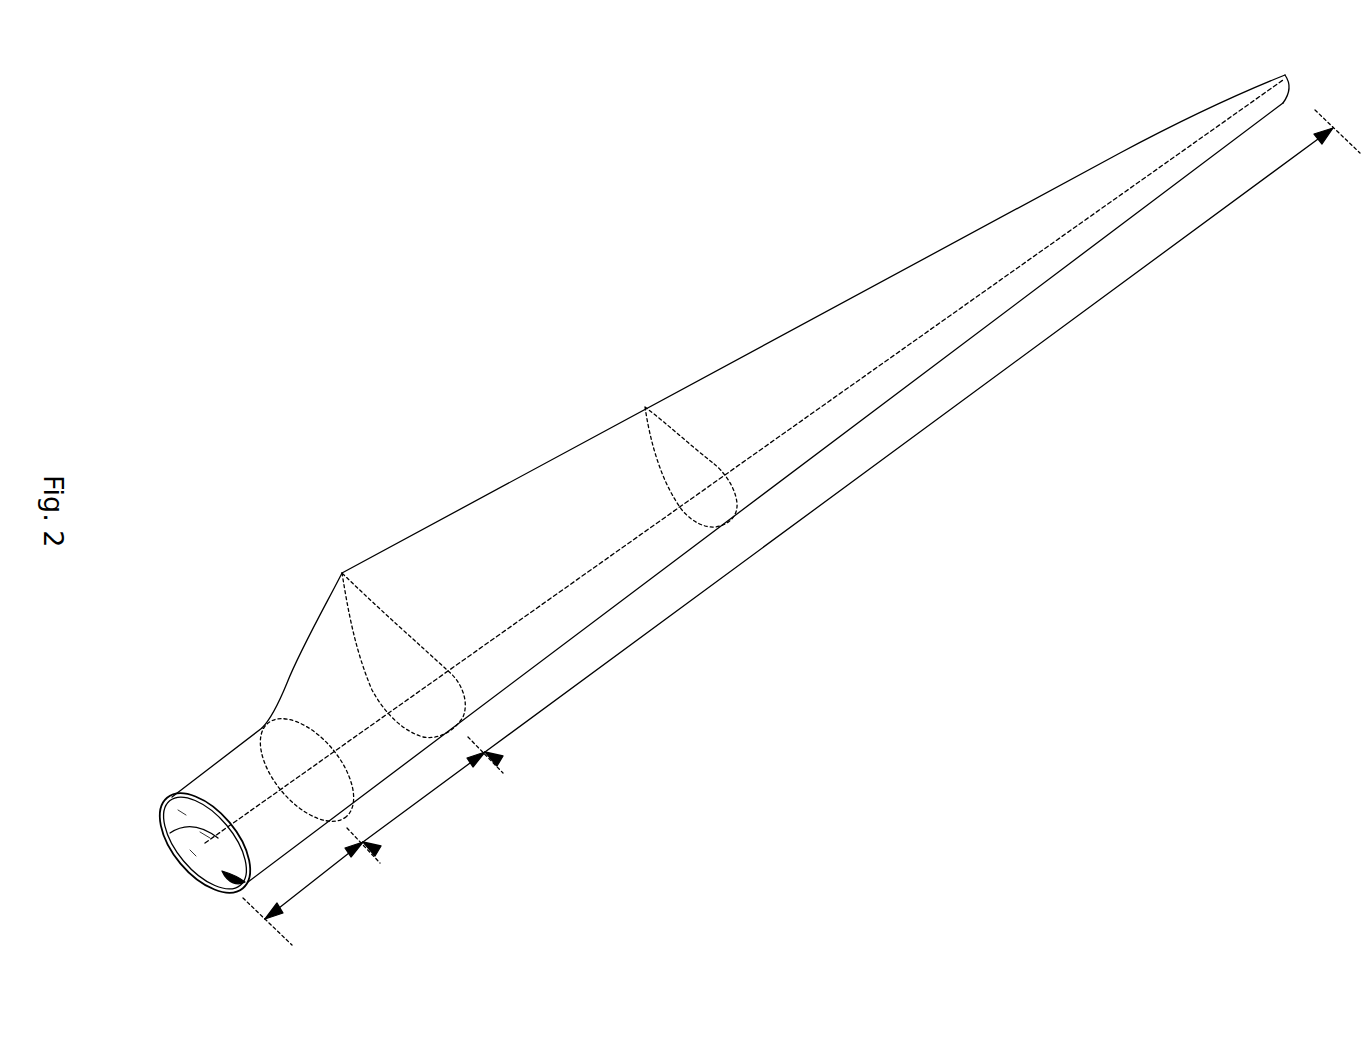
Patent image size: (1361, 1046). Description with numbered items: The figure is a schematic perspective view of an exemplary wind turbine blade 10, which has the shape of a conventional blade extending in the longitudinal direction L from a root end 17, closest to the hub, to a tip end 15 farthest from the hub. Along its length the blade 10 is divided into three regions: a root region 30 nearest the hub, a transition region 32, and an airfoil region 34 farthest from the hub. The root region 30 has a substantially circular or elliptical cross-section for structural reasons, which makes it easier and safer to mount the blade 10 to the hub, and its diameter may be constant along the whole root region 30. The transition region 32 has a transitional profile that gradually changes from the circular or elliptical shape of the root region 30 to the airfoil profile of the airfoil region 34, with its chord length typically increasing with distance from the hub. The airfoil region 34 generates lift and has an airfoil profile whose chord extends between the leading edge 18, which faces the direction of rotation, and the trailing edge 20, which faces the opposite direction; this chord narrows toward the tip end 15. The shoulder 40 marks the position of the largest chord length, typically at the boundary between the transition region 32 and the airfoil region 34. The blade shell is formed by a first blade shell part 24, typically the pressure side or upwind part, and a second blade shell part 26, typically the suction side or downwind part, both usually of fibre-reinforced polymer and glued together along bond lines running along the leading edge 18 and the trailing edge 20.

The wind turbine blade 10 is at (531, 333).
The tip end 15 is at (1285, 75).
The root end 17 is at (168, 808).
The leading edge 18 is at (948, 360).
The trailing edge 20 is at (821, 312).
The first blade shell part 24 is at (194, 798).
The second blade shell part 26 is at (197, 887).
The root region 30 is at (320, 877).
The transition region 32 is at (427, 795).
The airfoil region 34 is at (822, 508).
The shoulder 40 is at (342, 573).
The longitudinal direction L is at (173, 833).